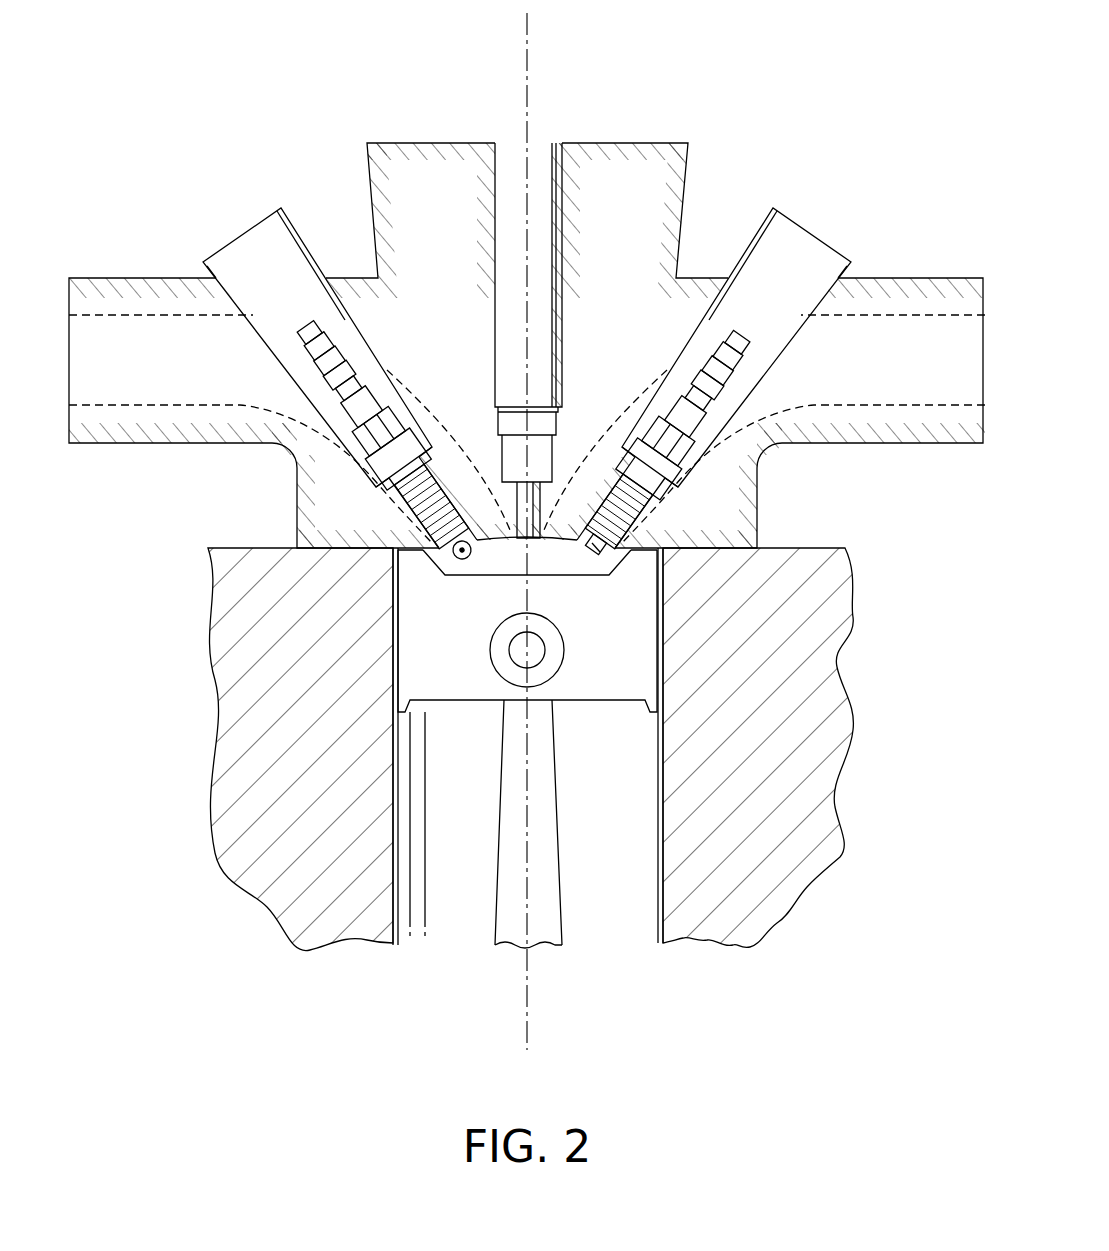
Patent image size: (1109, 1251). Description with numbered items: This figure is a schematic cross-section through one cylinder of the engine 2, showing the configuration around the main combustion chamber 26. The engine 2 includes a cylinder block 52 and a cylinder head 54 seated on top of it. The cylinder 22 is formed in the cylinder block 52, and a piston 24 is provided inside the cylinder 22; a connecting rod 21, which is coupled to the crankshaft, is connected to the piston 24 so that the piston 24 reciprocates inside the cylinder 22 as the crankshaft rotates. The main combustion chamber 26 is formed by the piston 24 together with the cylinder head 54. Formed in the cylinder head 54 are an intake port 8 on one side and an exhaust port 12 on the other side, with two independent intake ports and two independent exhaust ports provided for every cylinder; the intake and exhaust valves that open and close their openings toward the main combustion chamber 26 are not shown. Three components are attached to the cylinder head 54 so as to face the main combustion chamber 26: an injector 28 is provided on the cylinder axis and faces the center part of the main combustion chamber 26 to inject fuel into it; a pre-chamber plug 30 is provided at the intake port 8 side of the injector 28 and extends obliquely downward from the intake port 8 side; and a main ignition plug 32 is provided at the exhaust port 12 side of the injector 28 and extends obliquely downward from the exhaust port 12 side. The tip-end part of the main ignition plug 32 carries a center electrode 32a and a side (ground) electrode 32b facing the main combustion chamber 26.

The engine 2 is at (436, 88).
The intake port 8 is at (145, 325).
The exhaust port 12 is at (905, 330).
The connecting rod 21 is at (493, 925).
The cylinder 22 is at (397, 945).
The piston 24 is at (443, 703).
The main combustion chamber 26 is at (492, 558).
The injector 28 is at (551, 136).
The pre-chamber plug 30 is at (294, 305).
The main ignition plug 32 is at (758, 308).
The center electrode 32a is at (590, 545).
The side electrode 32b is at (600, 550).
The cylinder block 52 is at (233, 780).
The cylinder head 54 is at (148, 432).